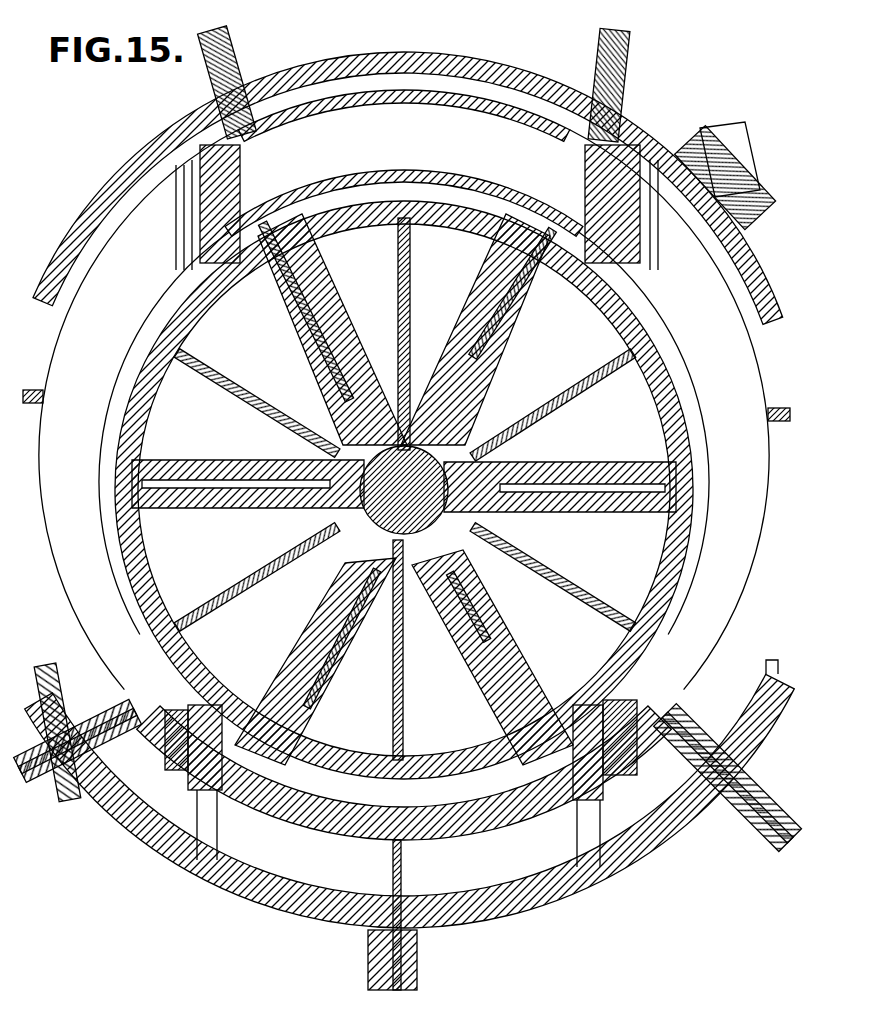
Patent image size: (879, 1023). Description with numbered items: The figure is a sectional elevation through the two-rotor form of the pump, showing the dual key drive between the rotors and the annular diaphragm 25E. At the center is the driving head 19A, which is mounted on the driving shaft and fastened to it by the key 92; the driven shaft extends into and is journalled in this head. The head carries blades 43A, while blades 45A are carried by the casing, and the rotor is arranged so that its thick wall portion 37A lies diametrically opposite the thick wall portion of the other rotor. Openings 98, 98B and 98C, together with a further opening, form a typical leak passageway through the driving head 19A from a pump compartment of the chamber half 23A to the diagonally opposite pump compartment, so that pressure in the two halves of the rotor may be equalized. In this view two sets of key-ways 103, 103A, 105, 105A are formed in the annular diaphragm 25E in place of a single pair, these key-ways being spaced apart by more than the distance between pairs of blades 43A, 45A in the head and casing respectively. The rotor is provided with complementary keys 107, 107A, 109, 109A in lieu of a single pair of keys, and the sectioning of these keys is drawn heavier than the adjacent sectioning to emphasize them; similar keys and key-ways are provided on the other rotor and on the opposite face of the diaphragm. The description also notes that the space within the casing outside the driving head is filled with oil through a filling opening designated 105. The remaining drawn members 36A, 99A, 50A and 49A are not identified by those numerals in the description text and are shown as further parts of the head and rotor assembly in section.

The chamber half 23A is at (406, 68).
The thick wall portion 37A is at (536, 96).
The annular diaphragm 25E is at (628, 826).
The opening 98 is at (456, 186).
The opening 98B is at (362, 628).
The opening 98C is at (356, 776).
The driving head 19A is at (140, 558).
The key 92 is at (336, 464).
The blades 43A is at (312, 228).
The spoke 36A is at (314, 776).
The pin 99A is at (392, 572).
The key-way 103A is at (216, 256).
The key-way 105A is at (588, 272).
The tie rod 50A is at (140, 397).
The tie rod 49A is at (708, 402).
The blades 45A is at (222, 50).
The key 107A is at (242, 176).
The key 109A is at (584, 180).
The key-way 105 is at (738, 160).
The key-way 103 is at (200, 736).
The key 107 is at (186, 766).
The key 109 is at (604, 790).